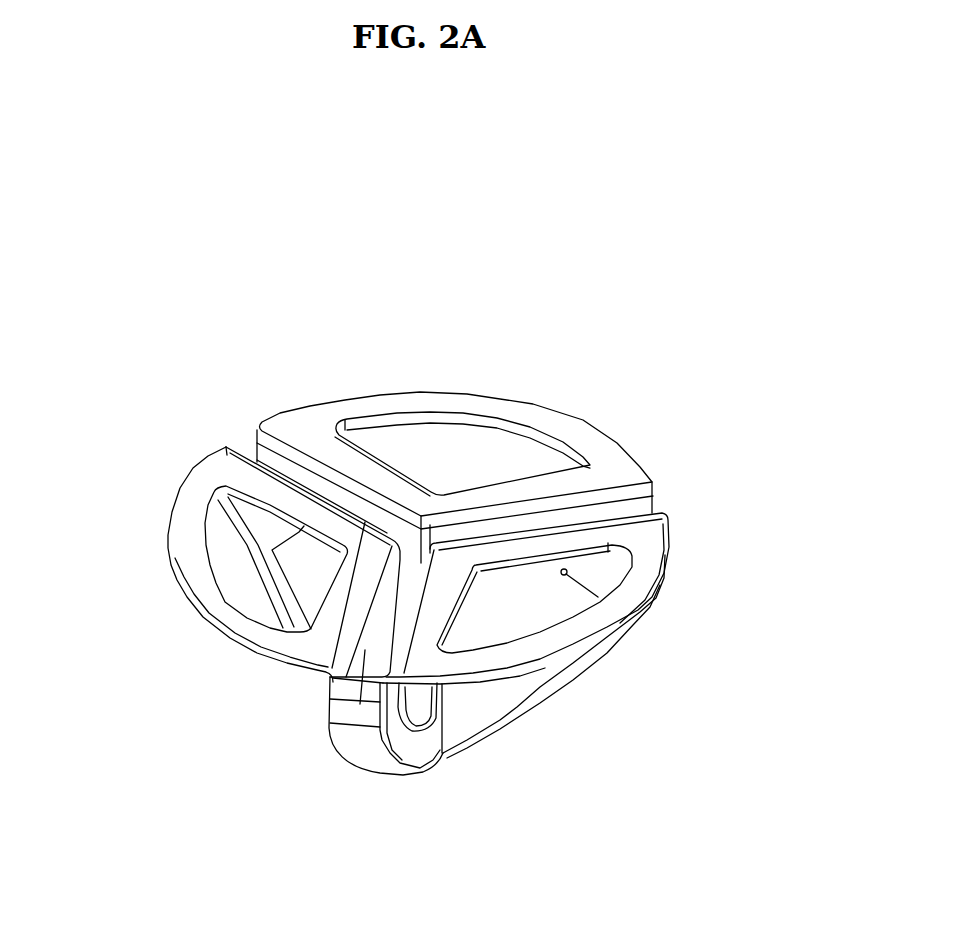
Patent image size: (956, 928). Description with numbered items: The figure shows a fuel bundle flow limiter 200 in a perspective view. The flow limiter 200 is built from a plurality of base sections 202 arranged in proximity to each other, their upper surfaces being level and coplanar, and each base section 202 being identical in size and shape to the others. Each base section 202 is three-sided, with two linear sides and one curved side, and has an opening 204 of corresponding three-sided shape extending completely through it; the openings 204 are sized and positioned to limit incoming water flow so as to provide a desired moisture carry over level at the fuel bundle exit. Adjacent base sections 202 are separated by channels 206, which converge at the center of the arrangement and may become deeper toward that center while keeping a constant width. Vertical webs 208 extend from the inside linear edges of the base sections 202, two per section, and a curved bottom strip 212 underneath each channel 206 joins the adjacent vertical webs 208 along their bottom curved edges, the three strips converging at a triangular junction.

The fuel bundle flow limiter 200 is at (623, 393).
The base section 202 is at (642, 543).
The opening 204 is at (451, 450).
The channel 206 is at (228, 433).
The vertical web 208 is at (472, 710).
The bottom strip 212 is at (360, 747).